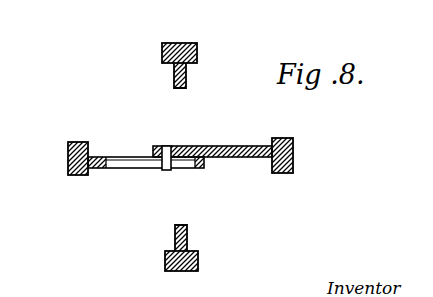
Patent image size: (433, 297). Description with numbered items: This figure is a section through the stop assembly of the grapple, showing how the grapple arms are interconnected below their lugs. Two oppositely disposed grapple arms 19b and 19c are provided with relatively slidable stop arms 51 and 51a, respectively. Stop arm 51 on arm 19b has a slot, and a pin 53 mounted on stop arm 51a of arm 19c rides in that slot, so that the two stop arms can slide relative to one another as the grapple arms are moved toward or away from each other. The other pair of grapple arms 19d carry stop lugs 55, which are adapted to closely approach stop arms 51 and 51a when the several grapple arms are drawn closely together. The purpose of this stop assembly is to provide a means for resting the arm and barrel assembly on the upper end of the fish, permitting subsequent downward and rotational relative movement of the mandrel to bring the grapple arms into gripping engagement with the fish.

The grapple arm 19b is at (68, 158).
The grapple arm 19c is at (287, 166).
The grapple arm 19d is at (177, 42).
The stop arm 51 is at (103, 169).
The stop arm 51a is at (218, 147).
The pin 53 is at (167, 170).
The stop lug 55 is at (173, 82).